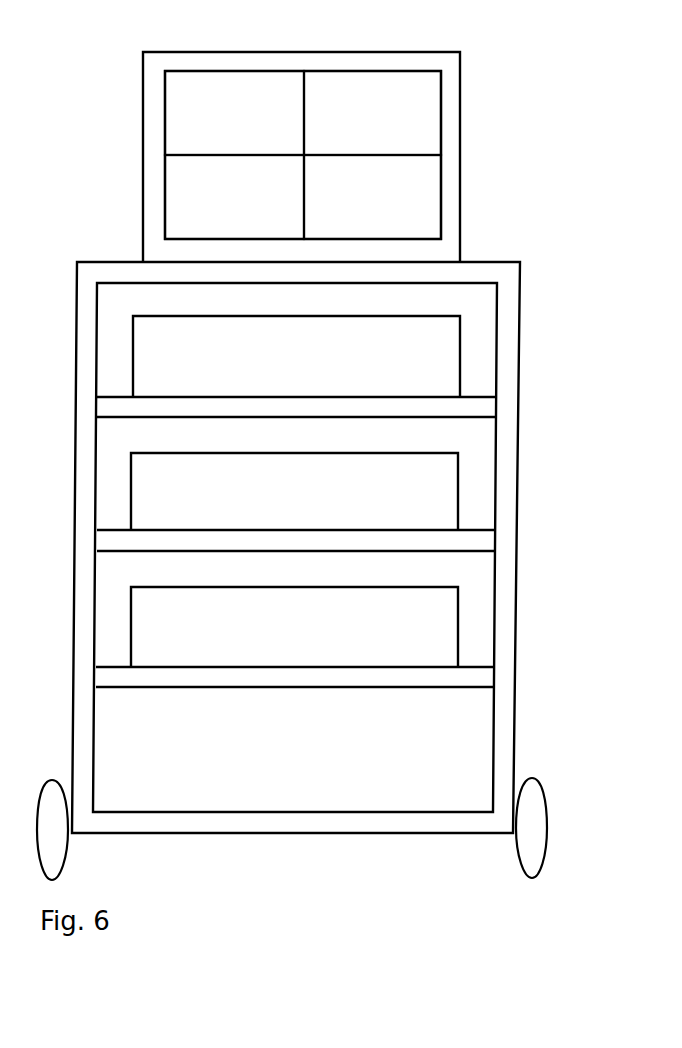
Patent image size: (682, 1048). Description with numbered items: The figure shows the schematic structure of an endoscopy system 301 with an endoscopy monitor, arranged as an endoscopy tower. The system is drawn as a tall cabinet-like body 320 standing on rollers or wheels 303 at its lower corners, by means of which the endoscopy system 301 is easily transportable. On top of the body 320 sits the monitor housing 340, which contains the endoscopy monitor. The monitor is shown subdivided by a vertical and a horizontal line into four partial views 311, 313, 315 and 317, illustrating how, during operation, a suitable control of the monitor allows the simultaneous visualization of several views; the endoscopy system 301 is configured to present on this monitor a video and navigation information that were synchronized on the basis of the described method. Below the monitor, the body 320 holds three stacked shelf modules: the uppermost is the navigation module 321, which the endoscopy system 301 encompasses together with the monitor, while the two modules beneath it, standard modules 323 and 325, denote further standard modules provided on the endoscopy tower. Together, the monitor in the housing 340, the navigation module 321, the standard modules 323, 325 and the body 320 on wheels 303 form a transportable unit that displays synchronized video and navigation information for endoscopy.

The endoscopy system 301 is at (554, 178).
The wheels 303 is at (526, 790).
The body / housing 320 is at (516, 298).
The navigation module 321 is at (452, 360).
The standard module 323 is at (450, 492).
The standard module 325 is at (450, 625).
The top compartment 340 is at (273, 52).
The partial view 311 is at (176, 108).
The partial view 313 is at (425, 118).
The partial view 315 is at (176, 198).
The partial view 317 is at (432, 208).